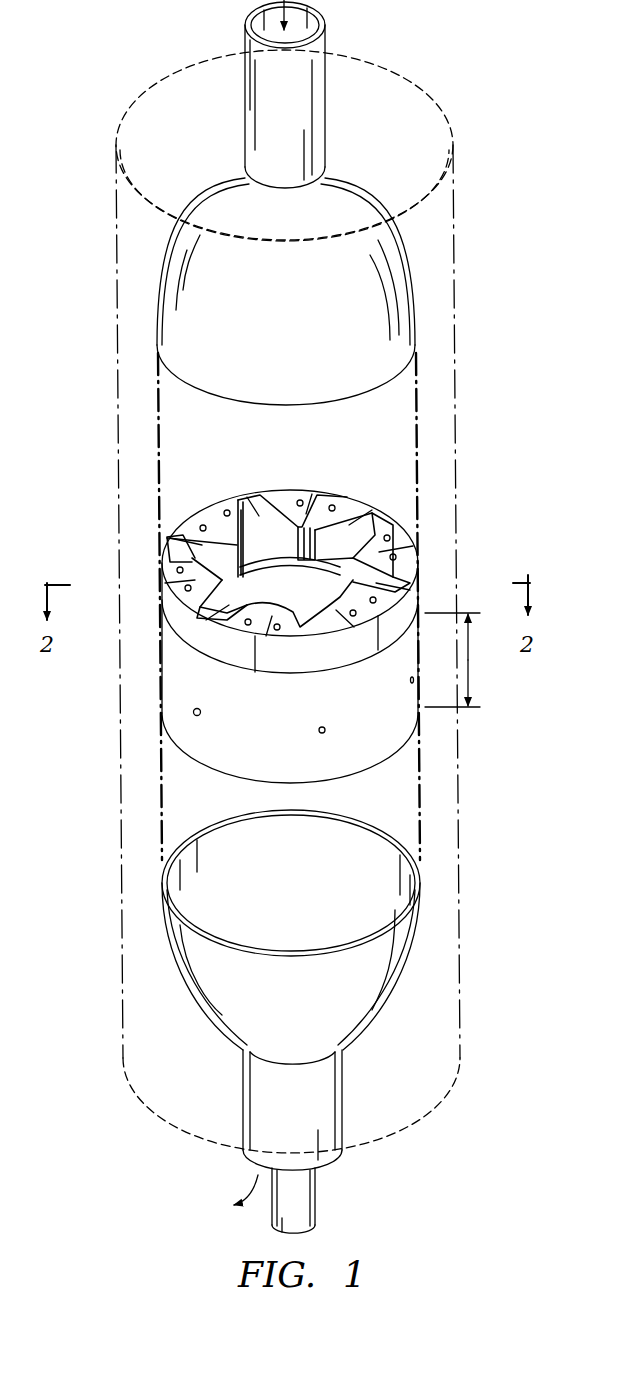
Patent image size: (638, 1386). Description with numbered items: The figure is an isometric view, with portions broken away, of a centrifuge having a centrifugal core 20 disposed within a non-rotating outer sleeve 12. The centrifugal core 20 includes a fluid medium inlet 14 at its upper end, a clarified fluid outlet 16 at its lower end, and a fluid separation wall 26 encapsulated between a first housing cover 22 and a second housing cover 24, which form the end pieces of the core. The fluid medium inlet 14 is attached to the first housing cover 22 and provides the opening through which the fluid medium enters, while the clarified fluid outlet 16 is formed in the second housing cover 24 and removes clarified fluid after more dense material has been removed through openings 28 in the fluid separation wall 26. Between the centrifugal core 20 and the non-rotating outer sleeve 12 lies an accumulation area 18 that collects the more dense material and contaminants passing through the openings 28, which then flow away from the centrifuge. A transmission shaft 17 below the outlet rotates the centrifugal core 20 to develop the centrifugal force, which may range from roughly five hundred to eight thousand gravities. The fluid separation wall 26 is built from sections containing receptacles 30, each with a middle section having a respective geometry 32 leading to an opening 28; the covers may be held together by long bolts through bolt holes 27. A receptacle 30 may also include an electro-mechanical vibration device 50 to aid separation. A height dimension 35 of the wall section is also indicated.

The non-rotating outer sleeve 12 is at (456, 283).
The fluid medium inlet 14 is at (325, 83).
The clarified fluid outlet 16 is at (343, 1100).
The transmission shaft 17 is at (317, 1193).
The accumulation area 18 is at (122, 360).
The centrifugal core 20 is at (286, 255).
The first housing cover 22 is at (355, 178).
The second housing cover 24 is at (218, 1038).
The fluid separation wall 26 is at (289, 609).
The bolt holes 27 is at (413, 523).
The openings 28 is at (194, 714).
The receptacle 30 is at (288, 528).
The respective geometry 32 is at (275, 553).
The height dimension 35 is at (469, 672).
The electro-mechanical vibration device 50 is at (226, 508).